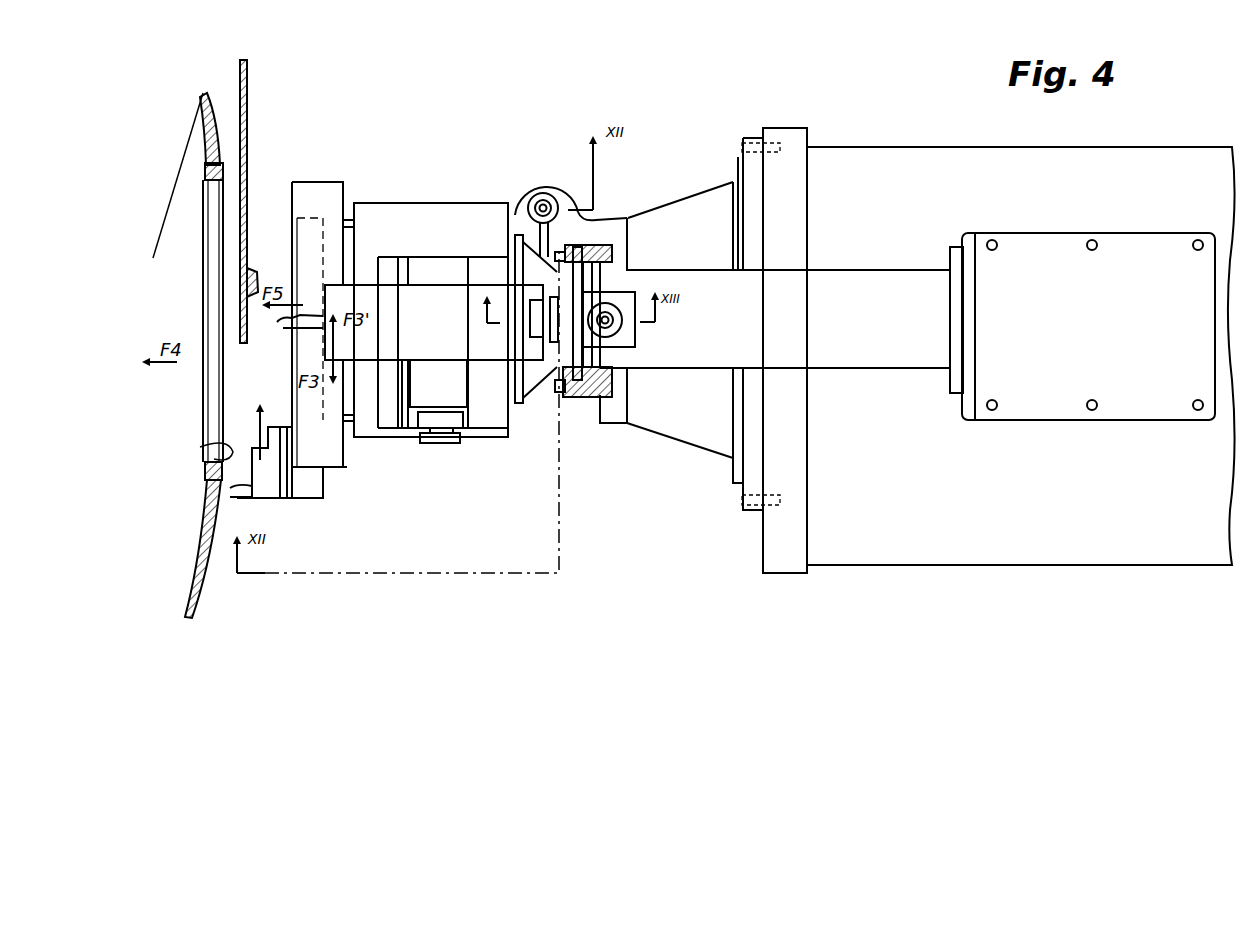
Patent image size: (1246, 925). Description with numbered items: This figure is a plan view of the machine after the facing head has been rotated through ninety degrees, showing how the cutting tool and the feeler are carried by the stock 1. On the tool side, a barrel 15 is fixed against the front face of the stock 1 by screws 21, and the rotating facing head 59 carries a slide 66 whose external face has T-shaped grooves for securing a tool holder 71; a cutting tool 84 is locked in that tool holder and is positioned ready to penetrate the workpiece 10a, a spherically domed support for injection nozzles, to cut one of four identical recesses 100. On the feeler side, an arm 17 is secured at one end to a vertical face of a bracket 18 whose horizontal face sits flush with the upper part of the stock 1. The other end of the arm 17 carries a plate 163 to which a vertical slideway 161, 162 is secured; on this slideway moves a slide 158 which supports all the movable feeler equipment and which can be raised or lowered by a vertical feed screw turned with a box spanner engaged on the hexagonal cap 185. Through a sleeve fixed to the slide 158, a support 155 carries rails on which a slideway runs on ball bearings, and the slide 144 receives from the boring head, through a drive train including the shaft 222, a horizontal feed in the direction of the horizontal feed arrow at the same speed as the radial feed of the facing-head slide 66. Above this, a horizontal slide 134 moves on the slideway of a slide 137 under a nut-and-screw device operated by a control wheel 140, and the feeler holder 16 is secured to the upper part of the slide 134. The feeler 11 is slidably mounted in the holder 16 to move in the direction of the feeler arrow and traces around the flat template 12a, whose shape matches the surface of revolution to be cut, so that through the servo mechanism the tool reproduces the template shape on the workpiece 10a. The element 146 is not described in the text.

The workpiece 10a is at (210, 140).
The flat template 12a is at (285, 243).
The feeler 11 is at (282, 326).
The slide 66 is at (305, 498).
The facing head 59 is at (346, 463).
The tool holder 71 is at (262, 492).
The cutting tool 84 is at (240, 492).
The recess 100 is at (194, 451).
The support 155 is at (416, 207).
The feeler holder 16 is at (434, 322).
The control wheel 140 is at (540, 344).
The slide 137 is at (480, 353).
The horizontal slide 134 is at (438, 361).
The slide 144 is at (402, 418).
The bracket 146 is at (432, 446).
The shaft 222 is at (565, 194).
The vertical slideway 161 is at (572, 252).
The cap 185 is at (608, 320).
The slide 158 is at (590, 368).
The plate 163 is at (598, 397).
The vertical slideway 162 is at (578, 398).
The barrel 15 is at (687, 443).
The arm 17 is at (770, 350).
The screws 21 is at (758, 512).
The stock 1 is at (1090, 540).
The bracket 18 is at (1082, 326).